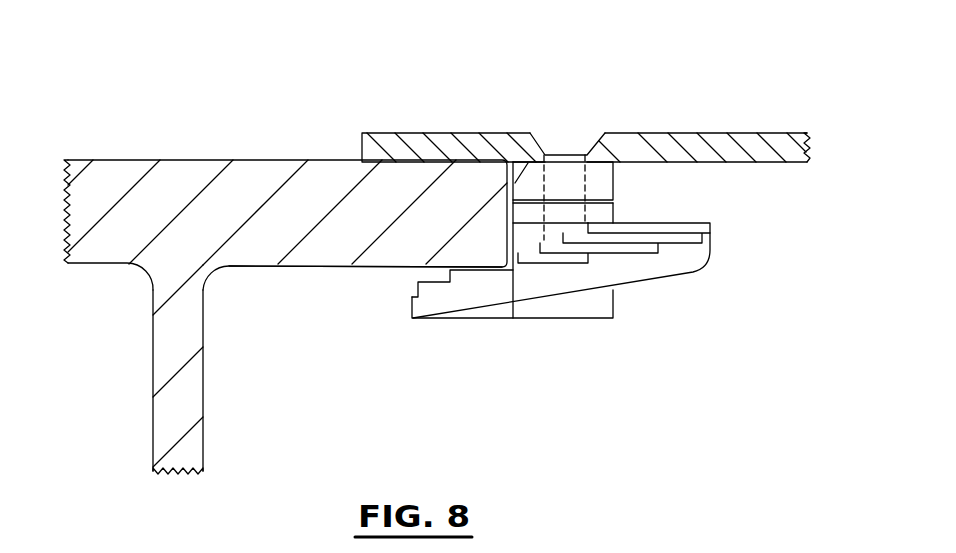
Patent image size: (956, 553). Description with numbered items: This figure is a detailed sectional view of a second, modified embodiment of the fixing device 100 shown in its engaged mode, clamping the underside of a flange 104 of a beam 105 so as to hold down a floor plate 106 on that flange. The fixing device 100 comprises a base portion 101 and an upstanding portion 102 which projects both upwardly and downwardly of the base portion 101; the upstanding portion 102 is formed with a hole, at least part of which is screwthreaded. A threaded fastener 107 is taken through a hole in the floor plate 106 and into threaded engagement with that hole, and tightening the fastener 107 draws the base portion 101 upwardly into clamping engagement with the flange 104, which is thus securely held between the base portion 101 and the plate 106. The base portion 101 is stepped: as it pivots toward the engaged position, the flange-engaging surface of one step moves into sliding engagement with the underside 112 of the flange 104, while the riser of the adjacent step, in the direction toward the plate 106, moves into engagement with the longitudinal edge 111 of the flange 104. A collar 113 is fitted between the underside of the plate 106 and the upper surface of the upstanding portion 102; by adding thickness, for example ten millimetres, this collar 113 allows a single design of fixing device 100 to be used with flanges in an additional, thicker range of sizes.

The fixing device 100 is at (484, 327).
The base portion 101 is at (645, 273).
The upstanding portion 102 is at (600, 215).
The flange 104 is at (335, 242).
The beam 105 is at (190, 413).
The floor plate 106 is at (422, 150).
The threaded fastener 107 is at (577, 143).
The longitudinal edge 111 is at (522, 158).
The underside 112 is at (300, 267).
The collar 113 is at (598, 183).